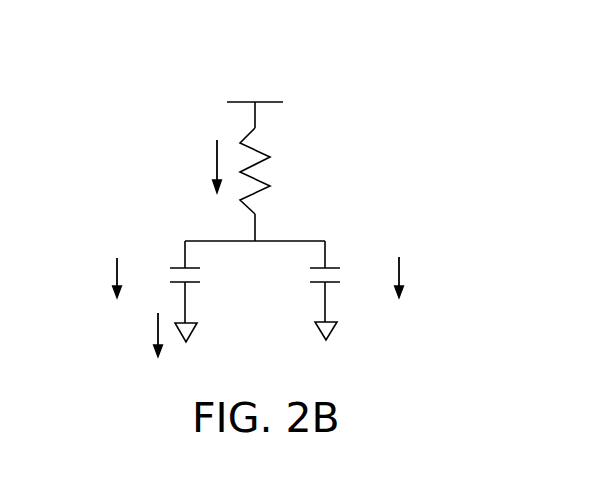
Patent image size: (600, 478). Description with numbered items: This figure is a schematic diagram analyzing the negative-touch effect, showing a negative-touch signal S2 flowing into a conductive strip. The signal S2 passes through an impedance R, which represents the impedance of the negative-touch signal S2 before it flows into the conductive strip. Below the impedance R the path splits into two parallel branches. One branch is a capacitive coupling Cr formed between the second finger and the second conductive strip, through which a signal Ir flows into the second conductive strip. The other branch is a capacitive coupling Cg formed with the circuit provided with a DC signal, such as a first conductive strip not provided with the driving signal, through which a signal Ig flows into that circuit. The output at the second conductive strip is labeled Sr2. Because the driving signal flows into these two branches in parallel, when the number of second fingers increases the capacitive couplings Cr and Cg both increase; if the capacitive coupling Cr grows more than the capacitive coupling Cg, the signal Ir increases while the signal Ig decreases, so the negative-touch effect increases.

The impedance R is at (271, 171).
The capacitive coupling Cr is at (167, 291).
The capacitive coupling Cg is at (347, 290).
The negative-touch signal S2 is at (201, 166).
The signal Ir is at (104, 278).
The signal Ig is at (418, 277).
The signal Sr2 is at (167, 350).